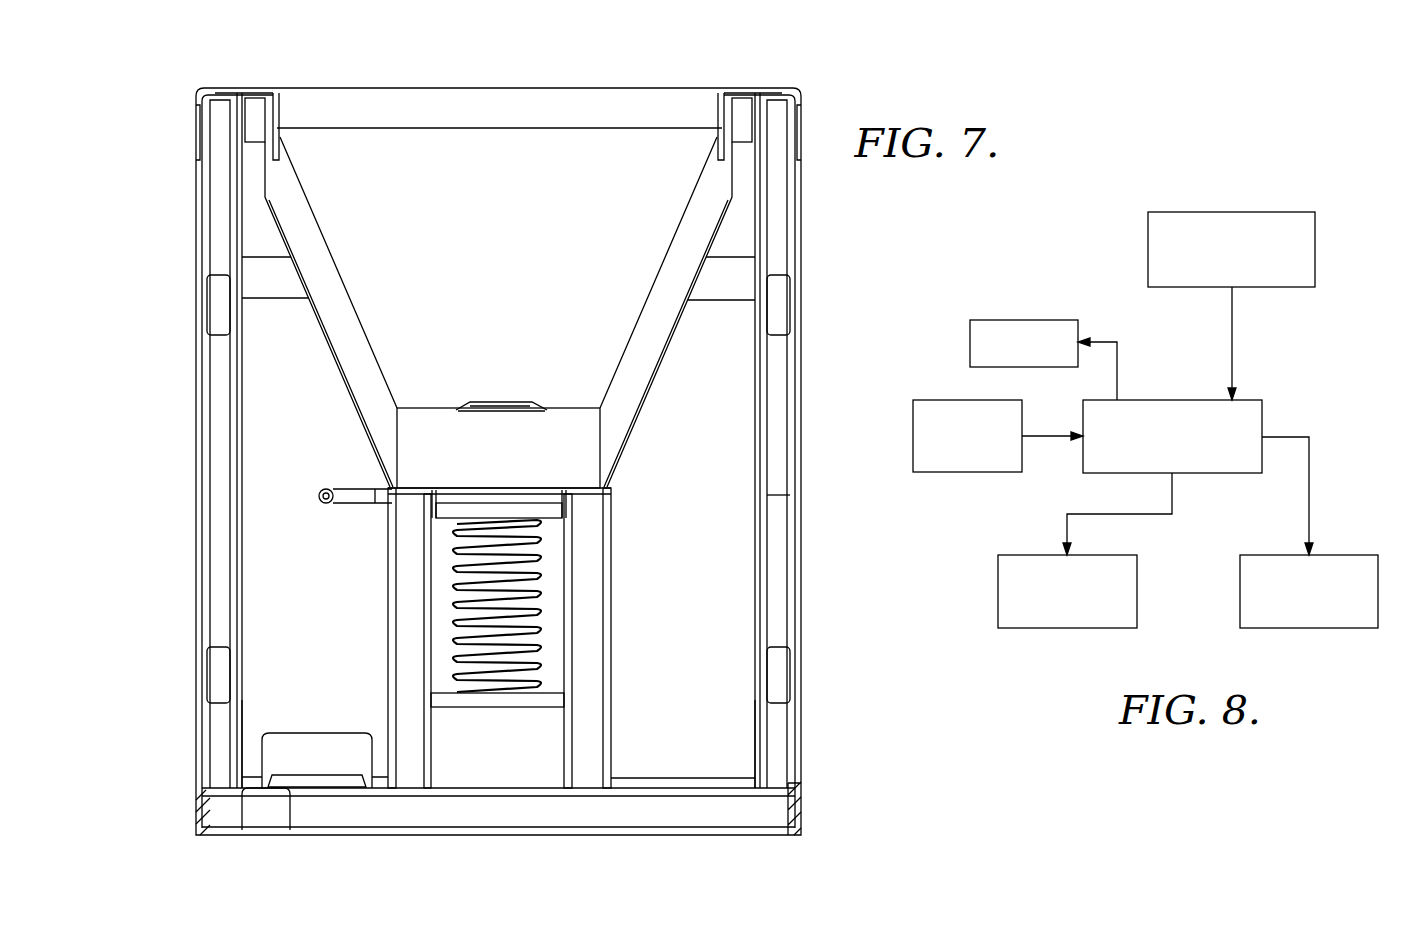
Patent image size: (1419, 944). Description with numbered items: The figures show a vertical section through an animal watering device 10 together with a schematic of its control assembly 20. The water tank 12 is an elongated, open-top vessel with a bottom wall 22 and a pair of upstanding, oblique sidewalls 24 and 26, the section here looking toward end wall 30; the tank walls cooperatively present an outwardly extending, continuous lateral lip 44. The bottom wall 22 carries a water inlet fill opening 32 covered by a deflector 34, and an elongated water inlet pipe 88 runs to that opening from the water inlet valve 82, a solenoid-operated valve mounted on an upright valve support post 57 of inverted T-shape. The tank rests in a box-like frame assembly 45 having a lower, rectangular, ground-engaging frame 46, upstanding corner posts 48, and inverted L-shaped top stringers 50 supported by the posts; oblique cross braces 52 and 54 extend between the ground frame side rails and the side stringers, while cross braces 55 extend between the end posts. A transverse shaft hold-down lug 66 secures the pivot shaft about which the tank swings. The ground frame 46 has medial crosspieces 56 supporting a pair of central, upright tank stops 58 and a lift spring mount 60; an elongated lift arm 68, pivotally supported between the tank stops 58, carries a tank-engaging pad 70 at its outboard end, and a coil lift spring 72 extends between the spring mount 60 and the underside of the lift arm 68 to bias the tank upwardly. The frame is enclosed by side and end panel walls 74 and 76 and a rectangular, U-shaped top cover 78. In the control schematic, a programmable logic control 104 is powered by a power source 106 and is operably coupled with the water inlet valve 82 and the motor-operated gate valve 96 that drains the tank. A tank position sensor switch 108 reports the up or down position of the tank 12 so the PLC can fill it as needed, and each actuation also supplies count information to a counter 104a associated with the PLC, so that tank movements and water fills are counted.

In FIG. 7, the animal watering device 10 is at (845, 232).
In FIG. 7, the water tank 12 is at (636, 443).
In FIG. 8, the control assembly 20 is at (1313, 188).
In FIG. 7, the bottom wall 22 is at (568, 415).
In FIG. 7, the oblique sidewall 24 is at (340, 372).
In FIG. 7, the oblique sidewall 26 is at (650, 378).
In FIG. 7, the end wall 30 is at (498, 312).
In FIG. 7, the water inlet fill opening 32 is at (496, 412).
In FIG. 7, the deflector 34 is at (489, 400).
In FIG. 7, the lateral lip 44 is at (258, 150).
In FIG. 7, the frame assembly 45 is at (812, 351).
In FIG. 7, the ground-engaging frame 46 is at (803, 810).
In FIG. 7, the corner post 48 is at (240, 722).
In FIG. 7, the top stringer 50 is at (196, 116).
In FIG. 7, the oblique cross brace 52 is at (790, 652).
In FIG. 7, the oblique cross brace 54 is at (207, 290).
In FIG. 7, the cross brace 55 is at (722, 296).
In FIG. 7, the crosspiece 56 is at (650, 818).
In FIG. 7, the valve support post 57 is at (291, 816).
In FIG. 7, the tank stop 58 is at (390, 616).
In FIG. 7, the lift spring mount 60 is at (550, 742).
In FIG. 7, the shaft hold-down lug 66 is at (232, 88).
In FIG. 7, the lift arm 68 is at (552, 518).
In FIG. 7, the tank-engaging pad 70 is at (445, 503).
In FIG. 7, the coil lift spring 72 is at (530, 615).
In FIG. 7, the side panel wall 74 is at (196, 440).
In FIG. 7, the end panel wall 76 is at (498, 686).
In FIG. 7, the top cover 78 is at (445, 90).
In FIG. 8, the water inlet valve 82 is at (1345, 556).
In FIG. 7, the water inlet pipe 88 is at (348, 505).
In FIG. 8, the gate valve 96 is at (1036, 630).
In FIG. 7, the programmable logic control 104 is at (327, 745).
In FIG. 8, the programmable logic control 104 is at (1258, 410).
In FIG. 8, the counter 104a is at (1020, 322).
In FIG. 8, the power source 106 is at (960, 474).
In FIG. 8, the tank position sensor switch 108 is at (1230, 215).